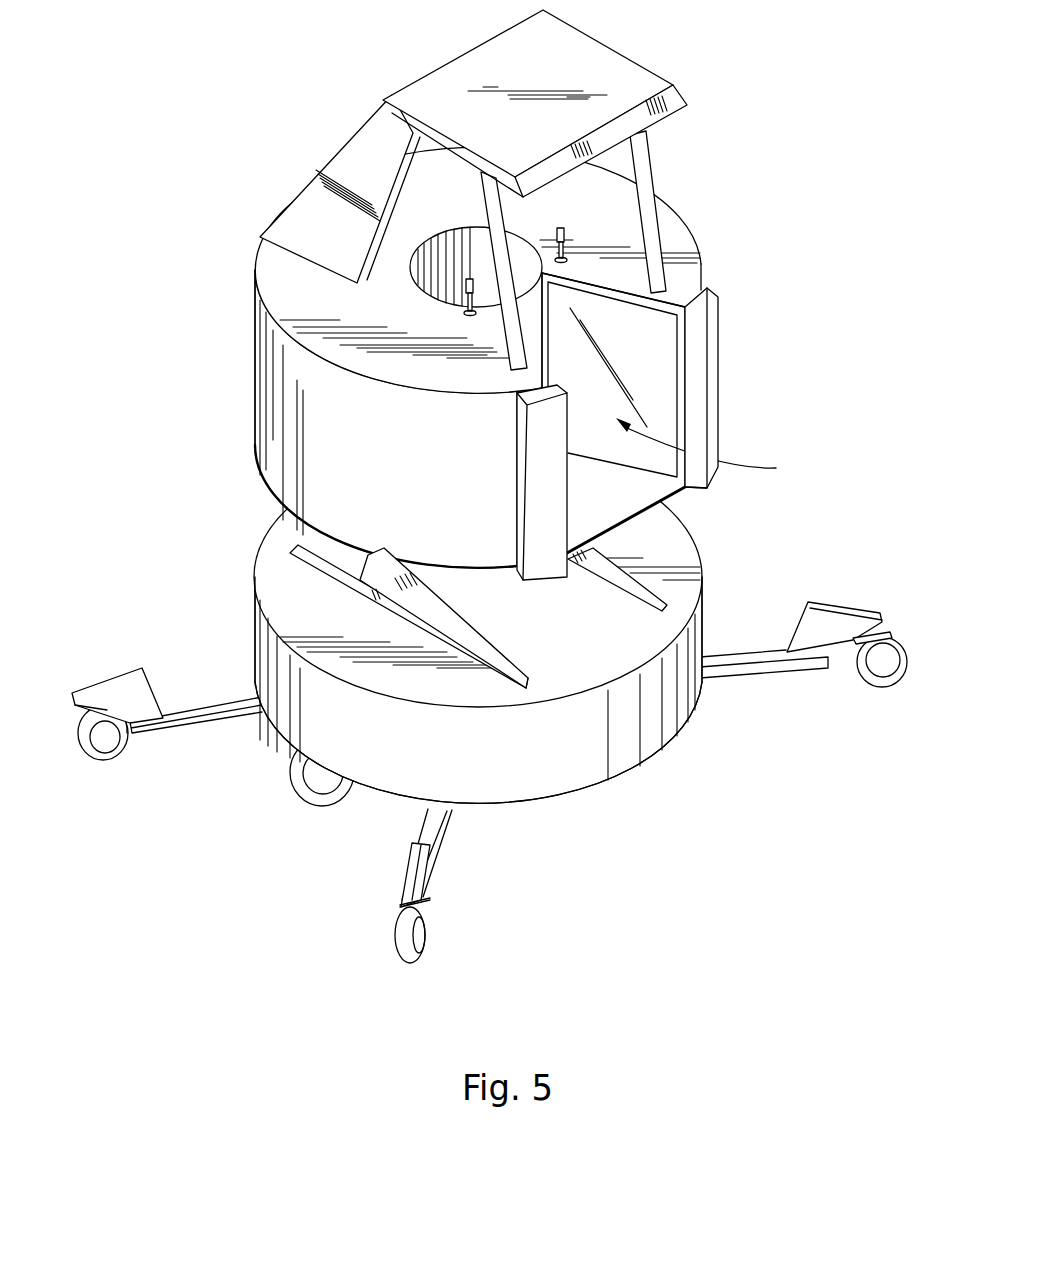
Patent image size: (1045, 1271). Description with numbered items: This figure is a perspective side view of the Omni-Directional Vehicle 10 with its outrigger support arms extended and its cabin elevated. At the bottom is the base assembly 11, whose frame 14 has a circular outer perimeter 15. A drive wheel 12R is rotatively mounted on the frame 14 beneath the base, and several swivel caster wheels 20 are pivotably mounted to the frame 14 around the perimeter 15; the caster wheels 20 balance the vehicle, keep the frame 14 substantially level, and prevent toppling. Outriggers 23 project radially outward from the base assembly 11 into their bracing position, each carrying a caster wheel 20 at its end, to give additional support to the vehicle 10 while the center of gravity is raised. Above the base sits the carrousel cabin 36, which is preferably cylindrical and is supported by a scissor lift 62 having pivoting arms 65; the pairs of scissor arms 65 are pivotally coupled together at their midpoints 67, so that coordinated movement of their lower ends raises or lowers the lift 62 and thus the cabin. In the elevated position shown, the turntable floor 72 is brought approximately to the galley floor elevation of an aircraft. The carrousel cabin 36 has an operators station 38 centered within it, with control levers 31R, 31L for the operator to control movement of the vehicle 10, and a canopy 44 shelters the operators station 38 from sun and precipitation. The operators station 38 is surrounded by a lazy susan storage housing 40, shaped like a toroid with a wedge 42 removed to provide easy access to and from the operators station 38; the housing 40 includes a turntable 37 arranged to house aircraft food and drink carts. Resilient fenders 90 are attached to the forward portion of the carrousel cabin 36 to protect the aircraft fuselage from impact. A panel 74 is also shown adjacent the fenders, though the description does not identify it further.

The Omni-Directional Vehicle 10 is at (504, 528).
The base assembly 11 is at (587, 798).
The drive wheel 12R is at (320, 808).
The frame 14 is at (523, 813).
The outer perimeter 15 is at (648, 744).
The swivel caster wheel 20 is at (93, 762).
The outrigger 23 is at (200, 730).
The control lever 31L is at (561, 227).
The control lever 31R is at (466, 300).
The carrousel cabin 36 is at (255, 367).
The turntable 37 is at (662, 413).
The operators station 38 is at (470, 260).
The lazy susan storage housing 40 is at (703, 252).
The wedge 42 is at (713, 451).
The canopy 44 is at (613, 47).
The scissor lift 62 is at (327, 562).
The scissor arm 65 is at (377, 580).
The midpoint 67 is at (389, 562).
The turntable floor 72 is at (615, 493).
The door 74 is at (662, 373).
The resilient fender 90 is at (540, 450).